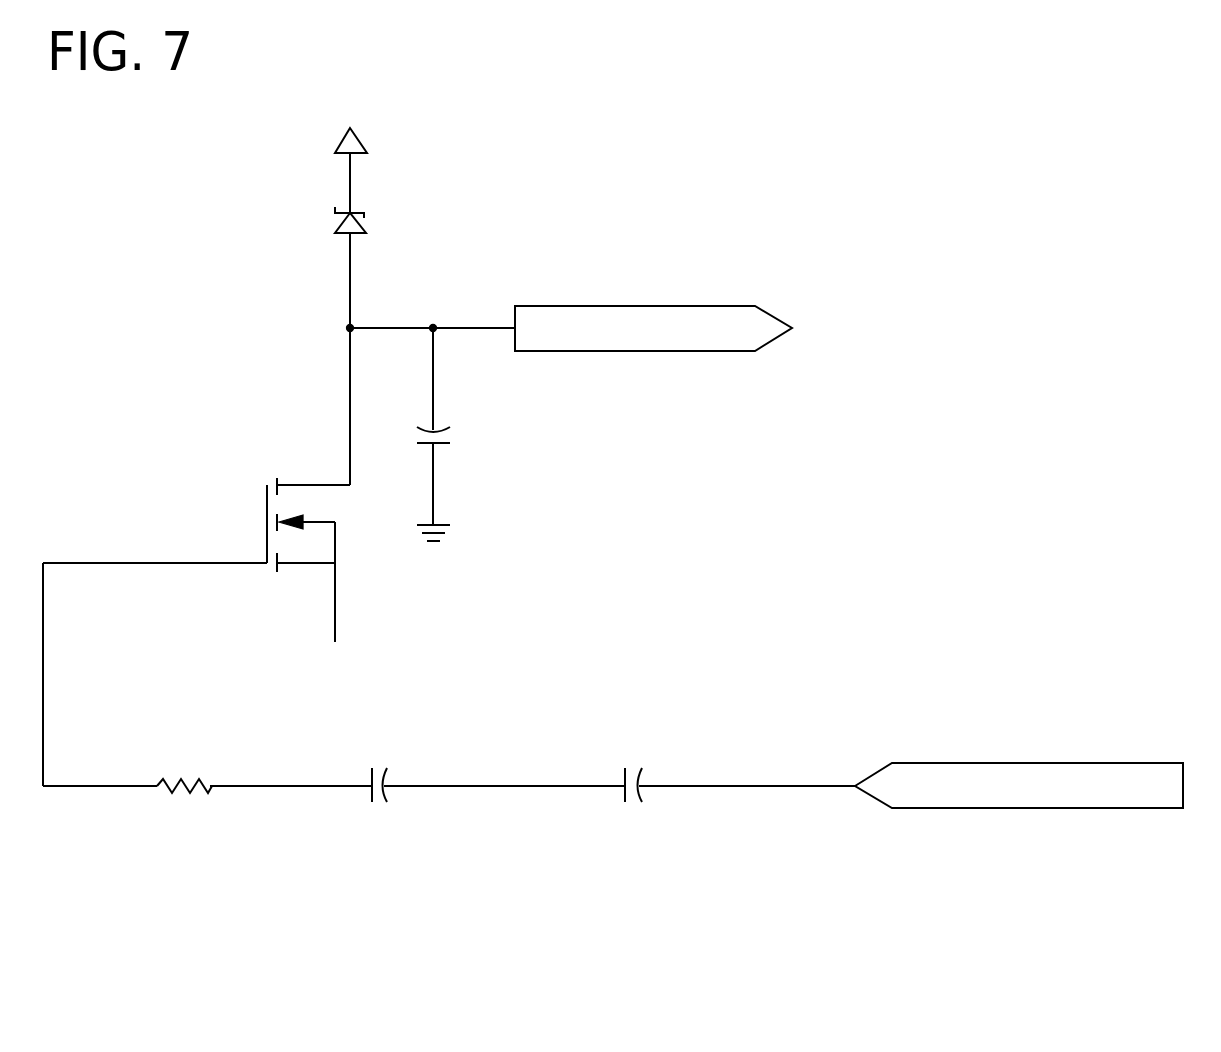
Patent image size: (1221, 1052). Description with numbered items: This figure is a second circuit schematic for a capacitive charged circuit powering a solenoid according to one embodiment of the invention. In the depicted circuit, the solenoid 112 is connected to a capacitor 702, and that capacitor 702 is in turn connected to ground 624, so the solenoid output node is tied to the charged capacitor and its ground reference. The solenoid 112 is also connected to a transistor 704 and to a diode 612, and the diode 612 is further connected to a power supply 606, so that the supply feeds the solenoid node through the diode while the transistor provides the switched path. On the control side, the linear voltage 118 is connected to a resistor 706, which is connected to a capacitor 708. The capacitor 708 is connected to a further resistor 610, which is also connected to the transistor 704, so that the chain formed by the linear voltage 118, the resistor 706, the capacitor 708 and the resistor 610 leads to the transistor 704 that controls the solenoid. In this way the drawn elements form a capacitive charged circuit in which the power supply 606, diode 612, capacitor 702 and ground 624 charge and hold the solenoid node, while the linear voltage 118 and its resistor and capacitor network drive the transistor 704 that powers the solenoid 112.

The power supply 606 is at (367, 140).
The diode 612 is at (366, 223).
The solenoid 112 is at (792, 320).
The capacitor 702 is at (445, 443).
The ground 624 is at (440, 523).
The transistor 704 is at (265, 527).
The resistor 610 is at (177, 782).
The capacitor 708 is at (390, 775).
The resistor 706 is at (645, 775).
The linear voltage 118 is at (993, 808).